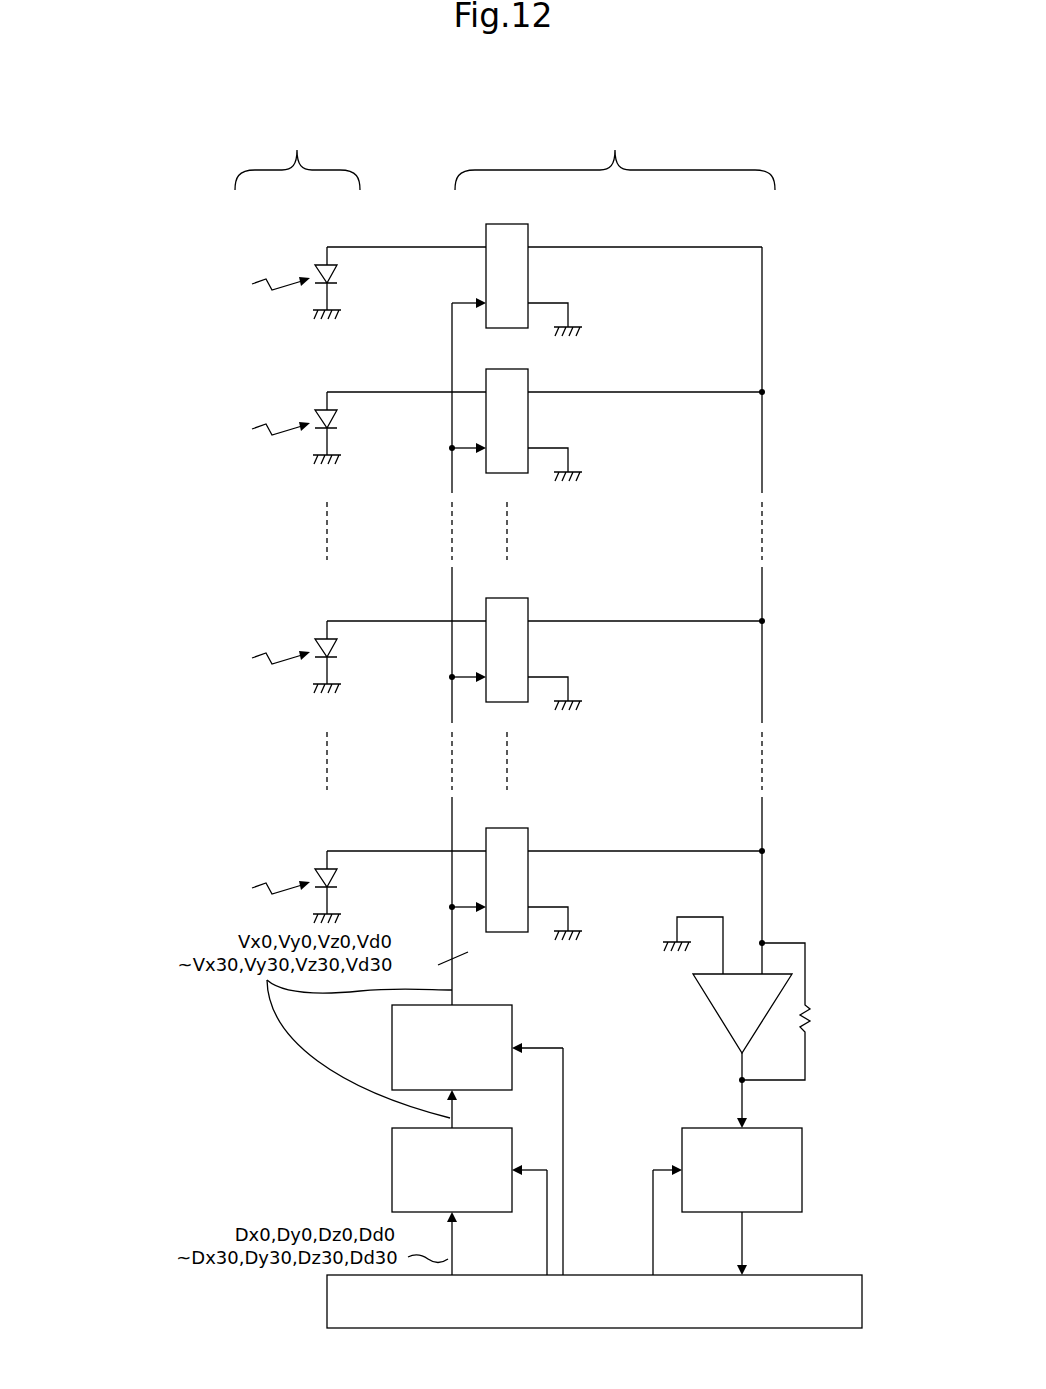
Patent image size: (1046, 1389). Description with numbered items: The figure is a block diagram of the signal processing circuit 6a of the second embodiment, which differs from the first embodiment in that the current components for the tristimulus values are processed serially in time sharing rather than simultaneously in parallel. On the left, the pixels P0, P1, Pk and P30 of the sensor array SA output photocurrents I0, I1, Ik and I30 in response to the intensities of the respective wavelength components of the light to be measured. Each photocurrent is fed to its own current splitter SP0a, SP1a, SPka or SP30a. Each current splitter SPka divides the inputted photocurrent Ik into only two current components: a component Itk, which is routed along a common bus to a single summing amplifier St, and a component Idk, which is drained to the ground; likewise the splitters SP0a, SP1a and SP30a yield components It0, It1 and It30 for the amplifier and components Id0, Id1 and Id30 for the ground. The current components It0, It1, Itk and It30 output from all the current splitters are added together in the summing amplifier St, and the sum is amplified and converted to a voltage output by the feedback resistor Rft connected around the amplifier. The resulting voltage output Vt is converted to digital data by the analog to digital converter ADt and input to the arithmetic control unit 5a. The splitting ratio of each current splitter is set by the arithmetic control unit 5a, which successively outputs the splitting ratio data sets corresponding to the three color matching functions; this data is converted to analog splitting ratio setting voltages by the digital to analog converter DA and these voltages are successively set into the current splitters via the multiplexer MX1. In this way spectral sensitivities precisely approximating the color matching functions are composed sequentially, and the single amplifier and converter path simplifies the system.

The sensor array SA is at (297, 156).
The signal processing circuit 6a is at (615, 156).
The pixel P0 is at (342, 283).
The pixel P1 is at (342, 428).
The pixel Pk is at (342, 657).
The pixel P30 is at (349, 887).
The photocurrent I0 is at (385, 234).
The photocurrent I1 is at (385, 379).
The photocurrent Ik is at (385, 608).
The photocurrent I30 is at (385, 838).
The current splitter SP0a is at (528, 238).
The current splitter SP1a is at (528, 383).
The current splitter SPka is at (528, 612).
The current splitter SP30a is at (528, 842).
The current component It0 is at (708, 234).
The current component It1 is at (708, 379).
The current component Itk is at (708, 608).
The current component It30 is at (708, 838).
The current component Id0 is at (580, 290).
The current component Id1 is at (580, 435).
The current component Idk is at (580, 664).
The current component Id30 is at (580, 894).
The multiplexer MX1 is at (392, 1048).
The digital to analog converter DA is at (392, 1170).
The summing amplifier St is at (725, 997).
The feedback resistor Rft is at (794, 1011).
The voltage output Vt is at (743, 1090).
The analog to digital converter ADt is at (802, 1168).
The arithmetic control unit 5a is at (603, 1317).